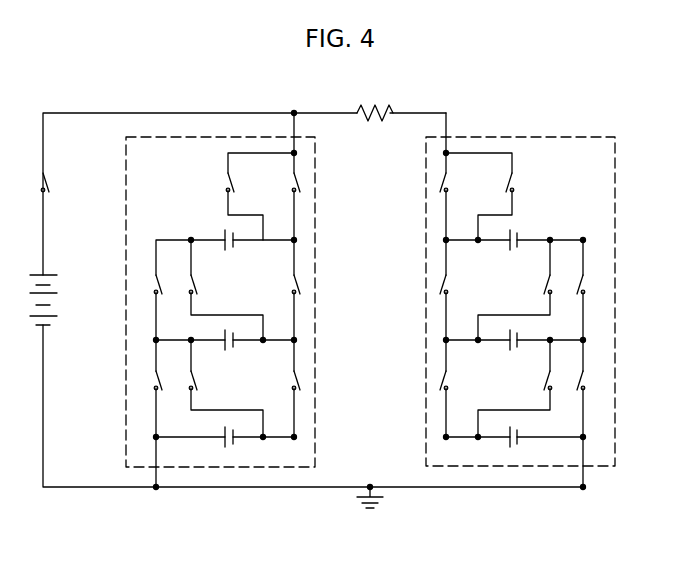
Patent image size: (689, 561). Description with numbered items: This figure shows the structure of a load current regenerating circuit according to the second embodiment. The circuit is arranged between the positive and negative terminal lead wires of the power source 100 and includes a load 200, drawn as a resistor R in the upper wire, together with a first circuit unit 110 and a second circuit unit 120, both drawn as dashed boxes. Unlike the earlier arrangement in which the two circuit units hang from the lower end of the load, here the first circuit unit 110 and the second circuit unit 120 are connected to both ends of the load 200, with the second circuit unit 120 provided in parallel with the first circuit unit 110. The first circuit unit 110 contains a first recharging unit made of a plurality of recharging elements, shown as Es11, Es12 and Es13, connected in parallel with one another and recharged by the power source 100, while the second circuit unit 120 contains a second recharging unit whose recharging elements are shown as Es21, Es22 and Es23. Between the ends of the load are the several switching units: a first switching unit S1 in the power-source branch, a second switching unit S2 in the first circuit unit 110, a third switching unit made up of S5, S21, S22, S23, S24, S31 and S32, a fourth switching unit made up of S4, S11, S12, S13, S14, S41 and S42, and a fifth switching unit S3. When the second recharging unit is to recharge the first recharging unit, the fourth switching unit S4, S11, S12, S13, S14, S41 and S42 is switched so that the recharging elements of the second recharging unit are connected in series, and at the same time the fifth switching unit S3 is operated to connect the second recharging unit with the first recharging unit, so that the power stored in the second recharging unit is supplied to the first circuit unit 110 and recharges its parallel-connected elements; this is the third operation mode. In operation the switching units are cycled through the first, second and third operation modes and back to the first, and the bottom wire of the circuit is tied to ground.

The power source 100 is at (57, 310).
The first circuit unit 110 is at (426, 440).
The second circuit unit 120 is at (315, 440).
The load 200 is at (372, 122).
The resistor R is at (368, 97).
The first switching unit S1 is at (34, 186).
The second switching unit S2 is at (520, 183).
The fifth switching unit S3 is at (218, 183).
The fourth switching unit S4 is at (455, 183).
The third switching unit S5 is at (285, 183).
The fourth switching unit S11 is at (460, 285).
The fourth switching unit S12 is at (460, 381).
The fourth switching unit S13 is at (594, 283).
The fourth switching unit S14 is at (594, 378).
The third switching unit S21 is at (279, 285).
The third switching unit S22 is at (279, 381).
The third switching unit S23 is at (147, 283).
The third switching unit S24 is at (147, 378).
The third switching unit S31 is at (558, 283).
The third switching unit S32 is at (558, 378).
The fourth switching unit S41 is at (183, 283).
The fourth switching unit S42 is at (183, 378).
The energy storage capacitor Es11 is at (511, 248).
The energy storage capacitor Es12 is at (511, 348).
The energy storage capacitor Es13 is at (511, 445).
The energy storage capacitor Es21 is at (225, 248).
The energy storage capacitor Es22 is at (225, 348).
The energy storage capacitor Es23 is at (225, 445).